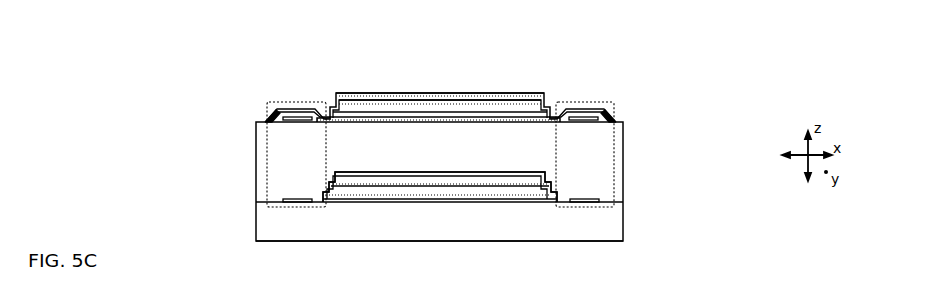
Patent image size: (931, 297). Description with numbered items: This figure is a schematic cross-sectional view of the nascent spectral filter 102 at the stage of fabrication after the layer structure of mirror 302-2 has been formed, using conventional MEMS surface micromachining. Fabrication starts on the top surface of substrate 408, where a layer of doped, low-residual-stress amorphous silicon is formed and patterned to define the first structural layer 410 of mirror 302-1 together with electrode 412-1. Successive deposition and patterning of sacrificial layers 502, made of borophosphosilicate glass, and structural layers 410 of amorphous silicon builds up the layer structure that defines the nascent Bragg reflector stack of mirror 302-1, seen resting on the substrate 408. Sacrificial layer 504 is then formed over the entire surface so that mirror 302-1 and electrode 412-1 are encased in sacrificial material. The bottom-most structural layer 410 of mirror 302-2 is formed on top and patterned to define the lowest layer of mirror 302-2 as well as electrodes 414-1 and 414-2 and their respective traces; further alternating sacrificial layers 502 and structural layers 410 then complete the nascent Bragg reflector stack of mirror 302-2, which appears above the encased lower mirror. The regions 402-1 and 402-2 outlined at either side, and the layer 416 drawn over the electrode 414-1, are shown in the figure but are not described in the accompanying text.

The spectral filter 102 is at (139, 67).
The substrate 408 is at (405, 237).
The first contact region 402-1 is at (298, 102).
The second contact region 402-2 is at (589, 102).
The passivation layer 416 is at (266, 120).
The electrode 414-1 is at (297, 121).
The electrode 414-2 is at (584, 121).
The electrode 412-1 is at (299, 199).
The structural layer 410 is at (445, 118).
The sacrificial layer 502 is at (405, 101).
The sacrificial layer 504 is at (462, 156).
The mirror 302-1 is at (418, 168).
The mirror 302-2 is at (468, 129).